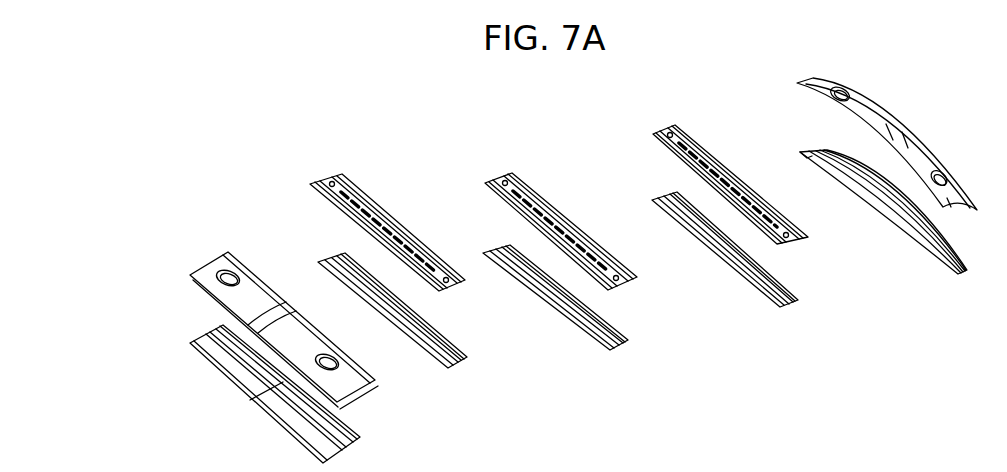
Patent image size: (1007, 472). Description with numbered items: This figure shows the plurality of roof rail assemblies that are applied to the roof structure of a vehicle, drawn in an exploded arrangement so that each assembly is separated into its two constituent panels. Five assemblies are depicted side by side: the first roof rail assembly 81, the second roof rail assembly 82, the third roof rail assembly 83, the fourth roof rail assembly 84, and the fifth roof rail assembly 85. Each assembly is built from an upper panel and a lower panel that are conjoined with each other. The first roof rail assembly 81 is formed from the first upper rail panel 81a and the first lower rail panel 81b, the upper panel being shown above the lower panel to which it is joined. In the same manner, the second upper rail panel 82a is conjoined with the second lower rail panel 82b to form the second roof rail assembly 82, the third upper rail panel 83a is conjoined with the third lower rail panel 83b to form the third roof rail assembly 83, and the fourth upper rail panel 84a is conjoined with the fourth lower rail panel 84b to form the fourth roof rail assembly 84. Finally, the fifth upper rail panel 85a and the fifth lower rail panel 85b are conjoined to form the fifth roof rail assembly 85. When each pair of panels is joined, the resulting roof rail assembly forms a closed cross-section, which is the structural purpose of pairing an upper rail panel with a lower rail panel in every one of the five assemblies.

The first roof rail assembly 81 is at (243, 339).
The first upper rail panel 81a is at (255, 312).
The first lower rail panel 81b is at (246, 359).
The second roof rail assembly 82 is at (351, 264).
The second upper rail panel 82a is at (362, 225).
The second lower rail panel 82b is at (363, 284).
The third roof rail assembly 83 is at (524, 240).
The third upper rail panel 83a is at (537, 210).
The third lower rail panel 83b is at (532, 260).
The fourth roof rail assembly 84 is at (691, 208).
The fourth upper rail panel 84a is at (704, 177).
The fourth lower rail panel 84b is at (699, 228).
The fifth roof rail assembly 85 is at (842, 161).
The fifth upper rail panel 85a is at (855, 129).
The fifth lower rail panel 85b is at (850, 182).